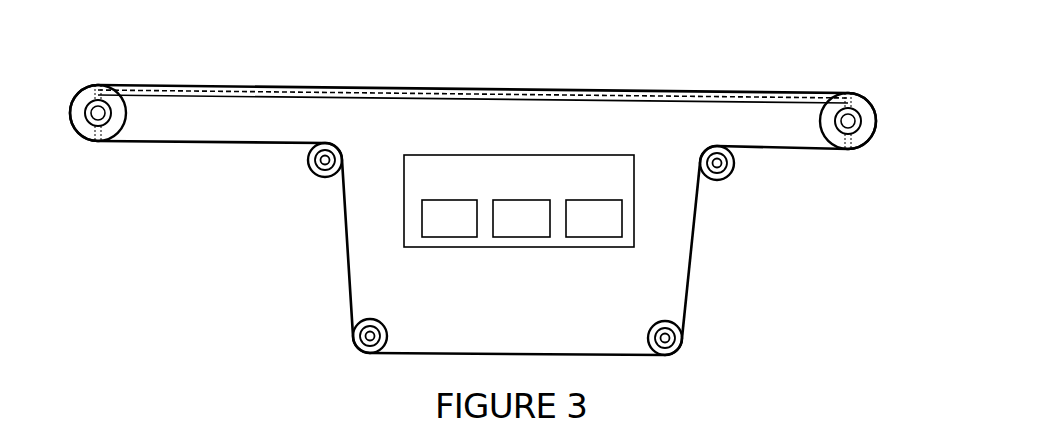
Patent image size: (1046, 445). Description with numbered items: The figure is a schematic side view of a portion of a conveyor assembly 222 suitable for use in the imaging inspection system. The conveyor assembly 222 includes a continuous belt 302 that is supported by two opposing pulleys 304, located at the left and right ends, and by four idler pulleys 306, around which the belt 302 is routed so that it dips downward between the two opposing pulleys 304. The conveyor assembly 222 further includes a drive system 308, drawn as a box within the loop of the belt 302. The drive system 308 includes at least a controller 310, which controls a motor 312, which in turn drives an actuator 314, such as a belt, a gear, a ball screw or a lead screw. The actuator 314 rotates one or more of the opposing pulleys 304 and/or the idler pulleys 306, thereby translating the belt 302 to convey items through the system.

The conveyor assembly 222 is at (822, 45).
The continuous belt 302 is at (430, 87).
The opposing pulleys 304 is at (83, 139).
The idler pulleys 306 is at (317, 171).
The drive system(s) 308 is at (523, 155).
The controller 310 is at (449, 218).
The motor 312 is at (521, 218).
The actuator 314 is at (594, 218).